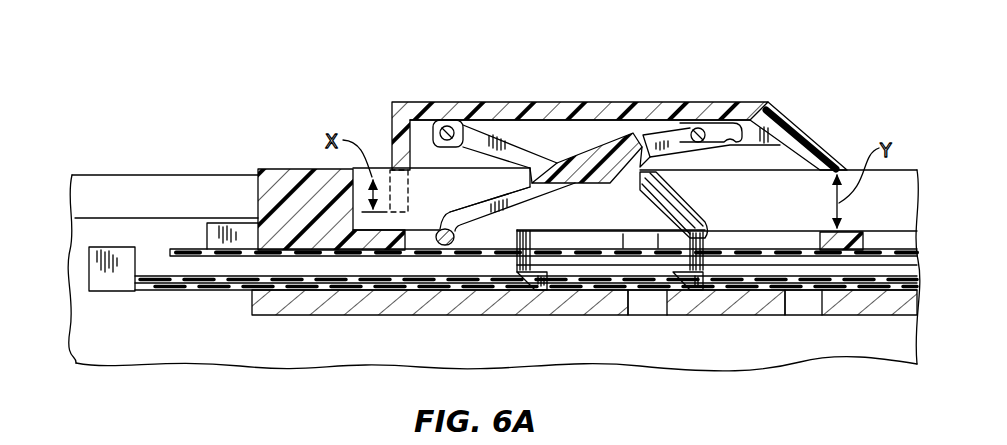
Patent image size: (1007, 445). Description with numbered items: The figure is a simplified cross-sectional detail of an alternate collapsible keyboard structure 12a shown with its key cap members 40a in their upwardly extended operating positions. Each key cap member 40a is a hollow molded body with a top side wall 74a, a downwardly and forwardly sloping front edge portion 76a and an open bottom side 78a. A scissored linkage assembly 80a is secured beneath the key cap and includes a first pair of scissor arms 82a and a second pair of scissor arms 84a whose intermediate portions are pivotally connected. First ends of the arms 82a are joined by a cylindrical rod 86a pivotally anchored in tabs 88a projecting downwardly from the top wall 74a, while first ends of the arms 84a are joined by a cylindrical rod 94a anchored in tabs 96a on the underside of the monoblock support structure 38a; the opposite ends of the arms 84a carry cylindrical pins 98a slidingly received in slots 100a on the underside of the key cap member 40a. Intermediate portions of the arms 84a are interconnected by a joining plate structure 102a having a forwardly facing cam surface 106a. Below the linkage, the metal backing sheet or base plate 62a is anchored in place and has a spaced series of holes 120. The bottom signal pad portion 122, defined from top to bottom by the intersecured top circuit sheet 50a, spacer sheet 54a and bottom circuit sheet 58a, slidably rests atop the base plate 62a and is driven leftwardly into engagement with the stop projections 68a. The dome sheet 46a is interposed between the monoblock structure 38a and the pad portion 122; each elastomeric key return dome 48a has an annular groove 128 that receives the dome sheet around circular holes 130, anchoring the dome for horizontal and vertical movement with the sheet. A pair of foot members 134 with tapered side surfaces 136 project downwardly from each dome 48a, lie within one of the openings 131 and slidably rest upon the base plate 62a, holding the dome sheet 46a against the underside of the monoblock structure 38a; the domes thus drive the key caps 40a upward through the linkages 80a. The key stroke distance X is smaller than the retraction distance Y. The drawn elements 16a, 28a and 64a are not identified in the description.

The collapsible keyboard structure 12a is at (831, 71).
The housing 16a is at (129, 178).
The circuit board 28a is at (798, 357).
The monoblock support structure 38a is at (289, 169).
The key cap member 40a is at (669, 97).
The dome sheet 46a is at (183, 248).
The key return dome 48a is at (678, 235).
The top circuit sheet 50a is at (496, 381).
The spacer sheet 54a is at (128, 290).
The bottom circuit sheet 58a is at (244, 292).
The base plate 62a is at (294, 314).
The insert 64a is at (207, 226).
The stop projection 68a is at (107, 292).
The top side wall 74a is at (527, 101).
The front edge portion 76a is at (810, 127).
The open bottom side 78a is at (476, 172).
The scissored linkage assembly 80a is at (573, 138).
The first pair of scissor arms 82a is at (484, 142).
The second pair of scissor arms 84a is at (497, 214).
The cylindrical rod 86a is at (448, 125).
The tab 88a is at (466, 129).
The cylindrical rod 94a is at (452, 224).
The tab 96a is at (433, 238).
The cylindrical pin 98a is at (704, 130).
The slot 100a is at (739, 145).
The joining plate structure 102a is at (604, 143).
The cam surface 106a is at (645, 167).
The hole 120 is at (630, 306).
The bottom signal pad structure portion 122 is at (208, 294).
The annular exterior side surface groove 128 is at (596, 247).
The circular hole 130 is at (535, 247).
The opening 131 is at (700, 286).
The foot member 134 is at (536, 282).
The tapered side surface 136 is at (531, 286).